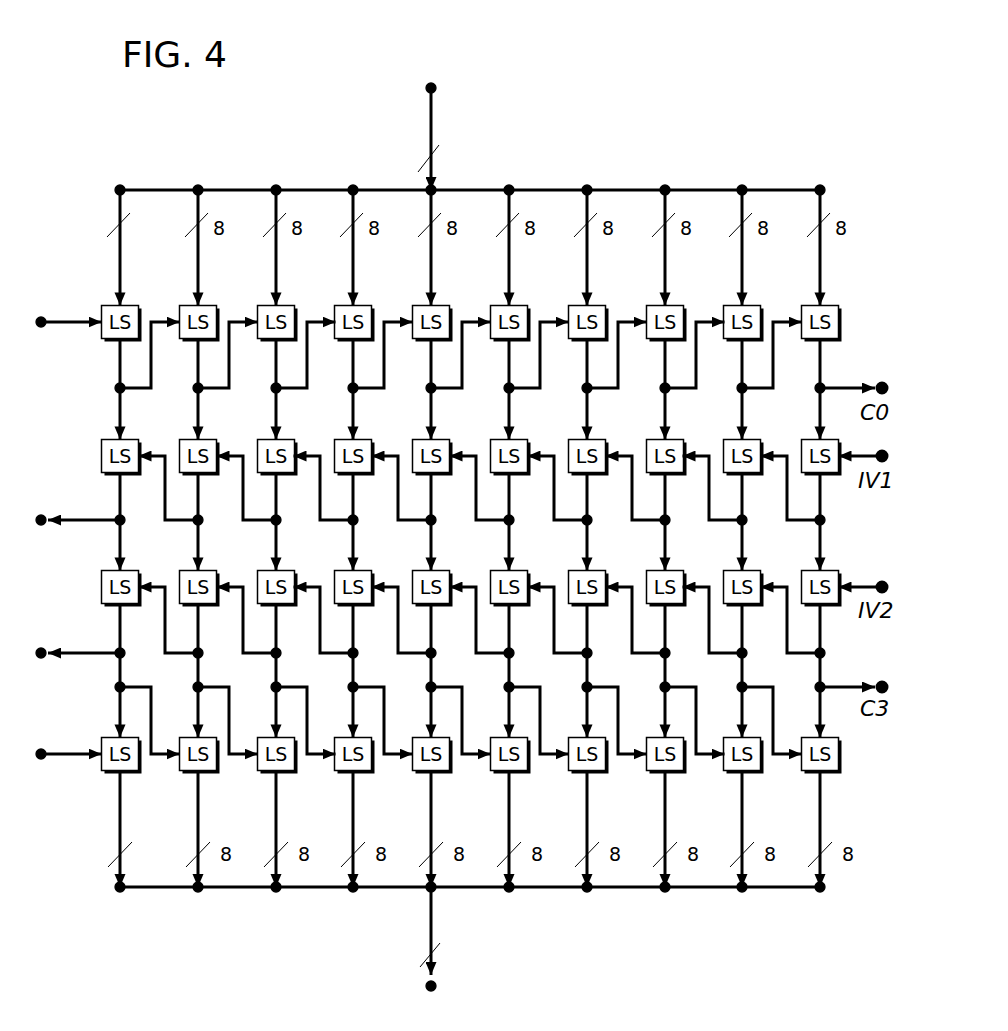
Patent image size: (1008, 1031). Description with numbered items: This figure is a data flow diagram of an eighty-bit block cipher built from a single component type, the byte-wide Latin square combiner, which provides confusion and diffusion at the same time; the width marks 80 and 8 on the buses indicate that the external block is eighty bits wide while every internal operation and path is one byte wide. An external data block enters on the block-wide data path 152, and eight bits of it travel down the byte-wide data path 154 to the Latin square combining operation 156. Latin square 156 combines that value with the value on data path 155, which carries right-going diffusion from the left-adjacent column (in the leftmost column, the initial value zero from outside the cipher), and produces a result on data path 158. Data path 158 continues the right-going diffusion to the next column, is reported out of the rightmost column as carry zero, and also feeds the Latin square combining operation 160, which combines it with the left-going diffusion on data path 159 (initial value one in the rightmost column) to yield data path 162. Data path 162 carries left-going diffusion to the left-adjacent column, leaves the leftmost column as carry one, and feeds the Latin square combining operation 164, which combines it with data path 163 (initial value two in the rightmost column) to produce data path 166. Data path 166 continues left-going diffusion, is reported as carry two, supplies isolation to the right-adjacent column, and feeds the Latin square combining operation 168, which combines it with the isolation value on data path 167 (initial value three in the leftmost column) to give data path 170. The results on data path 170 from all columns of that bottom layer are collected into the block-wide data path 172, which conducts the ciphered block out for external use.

The block-wide data path 152 is at (431, 106).
The byte-wide data path 154 is at (118, 250).
The byte-wide data path 155 is at (74, 321).
The byte-wide Latin square combining operation 156 is at (101, 308).
The byte-wide data path 158 is at (118, 355).
The byte-wide data path 159 is at (165, 455).
The Latin square combining operation 160 is at (101, 458).
The byte-wide data path 162 is at (118, 500).
The byte-wide data path 163 is at (165, 585).
The byte-wide Latin square combining operation 164 is at (101, 577).
The byte-wide data path 166 is at (118, 632).
The byte-wide data path 167 is at (63, 752).
The byte-wide Latin square combining operation 168 is at (101, 770).
The byte-wide data path 170 is at (118, 822).
The block-wide data path 172 is at (431, 913).
The 80-bit bus width 80 is at (444, 158).
The 8-bit bus width 8 is at (127, 226).